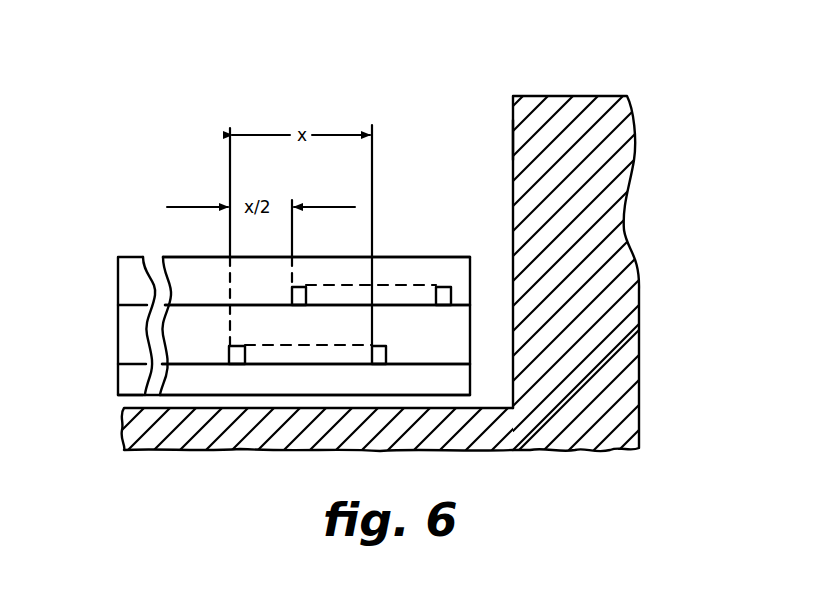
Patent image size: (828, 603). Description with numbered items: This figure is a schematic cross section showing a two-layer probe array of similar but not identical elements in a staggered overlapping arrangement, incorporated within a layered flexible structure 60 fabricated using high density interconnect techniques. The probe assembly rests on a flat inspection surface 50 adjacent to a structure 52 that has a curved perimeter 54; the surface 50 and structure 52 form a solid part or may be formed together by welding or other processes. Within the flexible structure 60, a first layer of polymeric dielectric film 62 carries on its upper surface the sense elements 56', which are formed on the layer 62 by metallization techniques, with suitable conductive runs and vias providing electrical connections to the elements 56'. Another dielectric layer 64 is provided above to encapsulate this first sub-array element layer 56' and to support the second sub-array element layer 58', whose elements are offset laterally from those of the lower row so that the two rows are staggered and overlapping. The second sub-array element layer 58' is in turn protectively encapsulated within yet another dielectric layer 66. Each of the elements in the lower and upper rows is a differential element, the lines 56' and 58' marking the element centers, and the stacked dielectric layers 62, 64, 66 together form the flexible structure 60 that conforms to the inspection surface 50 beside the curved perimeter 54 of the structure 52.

The flat inspection surface 50 is at (123, 430).
The structure 52 is at (567, 96).
The curved perimeter 54 is at (511, 137).
The sense elements of first sub-array element layer 56' is at (329, 276).
The second sub-array element layer 58' is at (397, 238).
The layered flexible structure 60 is at (408, 160).
The first layer of polymeric dielectric film 62 is at (428, 382).
The dielectric layer 64 is at (443, 348).
The dielectric layer 66 is at (415, 273).